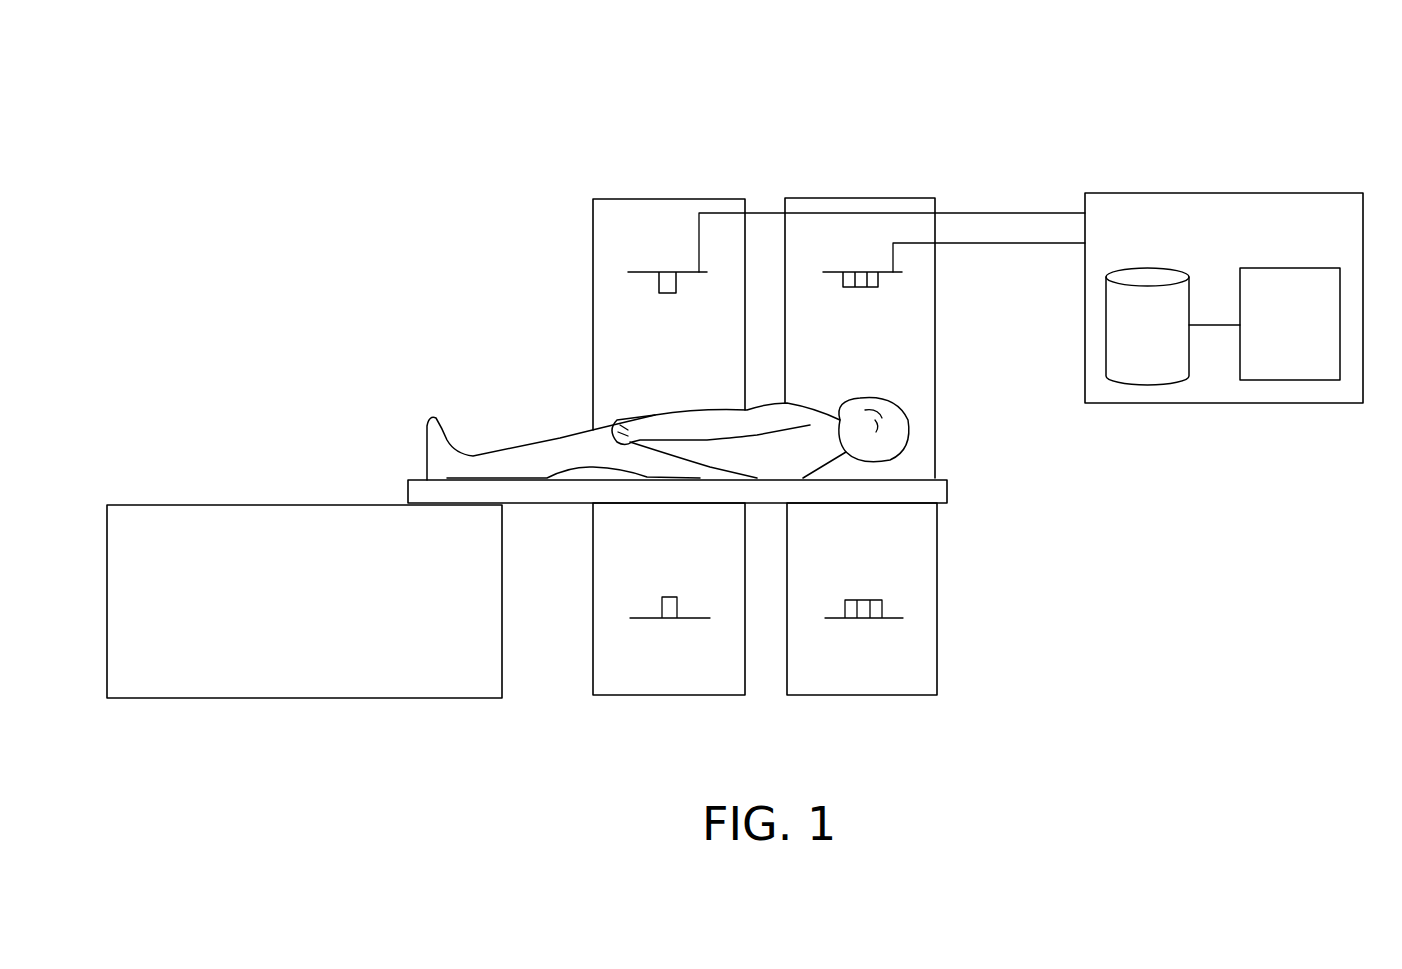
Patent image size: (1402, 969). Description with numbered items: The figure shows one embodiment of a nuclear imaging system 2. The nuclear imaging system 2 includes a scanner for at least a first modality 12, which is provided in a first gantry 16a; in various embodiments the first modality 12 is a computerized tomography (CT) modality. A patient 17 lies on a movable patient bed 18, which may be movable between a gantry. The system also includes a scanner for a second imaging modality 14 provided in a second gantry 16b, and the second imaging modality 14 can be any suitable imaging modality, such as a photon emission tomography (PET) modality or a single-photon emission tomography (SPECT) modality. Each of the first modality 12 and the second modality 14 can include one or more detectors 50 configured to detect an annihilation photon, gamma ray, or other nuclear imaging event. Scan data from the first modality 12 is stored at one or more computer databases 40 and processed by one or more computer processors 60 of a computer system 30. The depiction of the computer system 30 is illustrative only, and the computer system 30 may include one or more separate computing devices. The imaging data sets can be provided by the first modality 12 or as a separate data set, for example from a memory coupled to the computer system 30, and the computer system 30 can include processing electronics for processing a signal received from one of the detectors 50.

The nuclear imaging system 2 is at (323, 278).
The first modality 12 is at (638, 272).
The second imaging modality 14 is at (880, 278).
The first gantry 16a is at (664, 199).
The second gantry 16b is at (858, 198).
The patient 17 is at (562, 438).
The movable patient bed 18 is at (415, 477).
The computer system 30 is at (1116, 193).
The computer databases 40 is at (1131, 364).
The detectors 50 is at (672, 268).
The computer processors 60 is at (1280, 345).